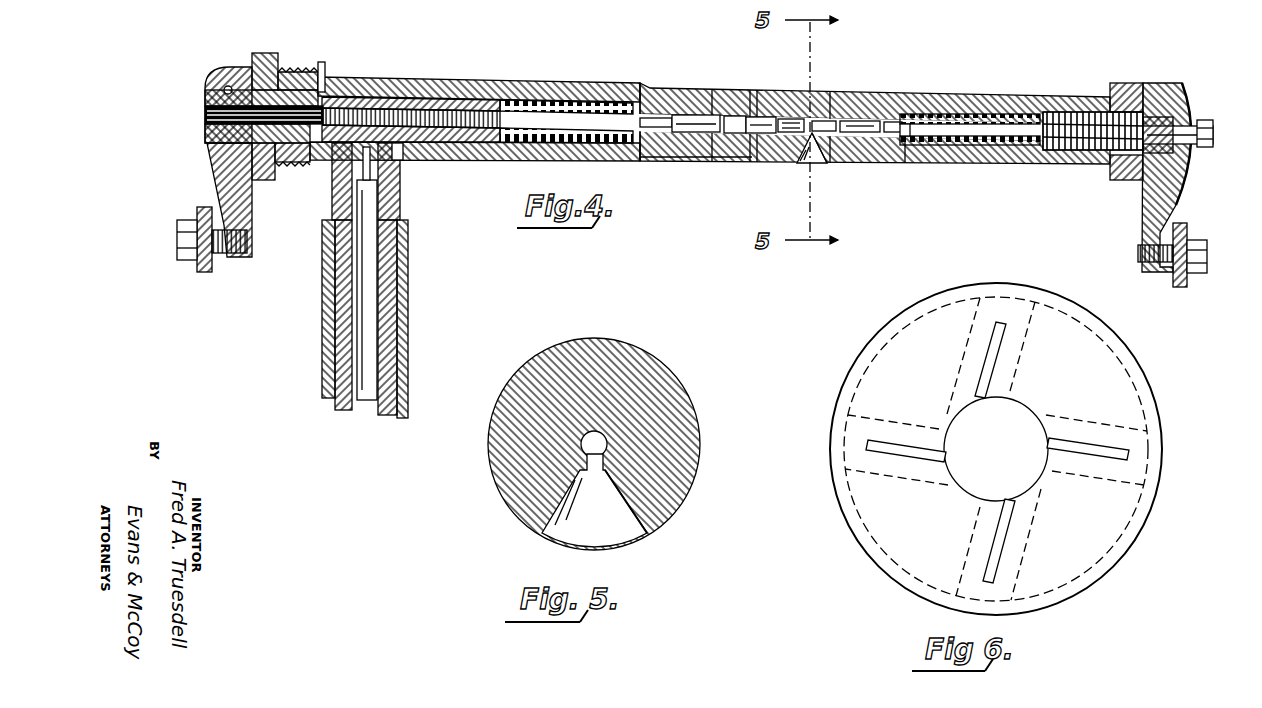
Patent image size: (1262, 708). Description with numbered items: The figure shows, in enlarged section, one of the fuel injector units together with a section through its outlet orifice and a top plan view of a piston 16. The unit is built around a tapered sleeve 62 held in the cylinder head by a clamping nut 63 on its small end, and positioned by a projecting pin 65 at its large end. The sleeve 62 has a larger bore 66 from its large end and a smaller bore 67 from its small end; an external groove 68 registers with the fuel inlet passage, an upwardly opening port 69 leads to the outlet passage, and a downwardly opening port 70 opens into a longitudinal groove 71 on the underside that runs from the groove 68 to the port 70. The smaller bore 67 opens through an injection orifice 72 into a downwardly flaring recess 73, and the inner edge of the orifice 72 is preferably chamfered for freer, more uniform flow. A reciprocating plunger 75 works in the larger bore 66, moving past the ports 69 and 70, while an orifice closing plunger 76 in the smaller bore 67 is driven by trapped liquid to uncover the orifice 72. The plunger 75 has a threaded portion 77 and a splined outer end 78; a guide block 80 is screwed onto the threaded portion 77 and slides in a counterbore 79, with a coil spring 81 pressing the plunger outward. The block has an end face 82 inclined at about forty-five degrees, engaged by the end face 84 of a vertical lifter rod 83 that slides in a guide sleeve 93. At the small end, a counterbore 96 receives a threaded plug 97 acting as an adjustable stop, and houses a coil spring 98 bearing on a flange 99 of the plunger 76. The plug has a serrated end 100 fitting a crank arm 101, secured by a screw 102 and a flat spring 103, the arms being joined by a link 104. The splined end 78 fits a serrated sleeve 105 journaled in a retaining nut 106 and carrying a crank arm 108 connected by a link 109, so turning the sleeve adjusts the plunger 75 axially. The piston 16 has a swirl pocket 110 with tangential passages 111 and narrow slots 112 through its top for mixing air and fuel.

In FIG. 6, the piston 16 is at (915, 311).
In FIG. 4, the tapered sleeve 62 is at (690, 85).
In FIG. 5, the tapered sleeve 62 is at (660, 386).
In FIG. 4, the clamping nut 63 is at (1130, 84).
In FIG. 4, the pin or key 65 is at (326, 66).
In FIG. 4, the bore 66 is at (788, 118).
In FIG. 4, the bore 67 is at (840, 119).
In FIG. 5, the bore 67 is at (607, 442).
In FIG. 4, the external groove 68 is at (660, 87).
In FIG. 4, the port 69 is at (740, 117).
In FIG. 4, the port 70 is at (746, 163).
In FIG. 4, the longitudinal groove 71 is at (690, 158).
In FIG. 4, the injection orifice 72 is at (806, 148).
In FIG. 5, the injection orifice 72 is at (592, 475).
In FIG. 4, the downwardly flaring recess 73 is at (827, 163).
In FIG. 5, the downwardly flaring recess 73 is at (630, 515).
In FIG. 4, the plunger 75 is at (712, 116).
In FIG. 4, the orifice closing plunger 76 is at (886, 119).
In FIG. 4, the threaded portion 77 is at (448, 106).
In FIG. 4, the splined outer end portion 78 is at (205, 118).
In FIG. 4, the counterbore 79 is at (585, 101).
In FIG. 4, the guide block 80 is at (496, 99).
In FIG. 4, the coil spring 81 is at (540, 143).
In FIG. 4, the outer end face 82 is at (332, 165).
In FIG. 4, the lifter rod 83 is at (408, 282).
In FIG. 4, the upper end face 84 is at (400, 150).
In FIG. 4, the guide sleeve 93 is at (408, 322).
In FIG. 4, the counterbore 96 is at (1015, 136).
In FIG. 4, the threaded plug 97 is at (1085, 112).
In FIG. 4, the coil spring 98 is at (960, 114).
In FIG. 4, the flange 99 is at (915, 163).
In FIG. 4, the serrated outer end 100 is at (1185, 125).
In FIG. 4, the crank arm 101 is at (1178, 197).
In FIG. 4, the screw 102 is at (1210, 120).
In FIG. 4, the flat spring 103 is at (1193, 165).
In FIG. 4, the link 104 is at (1195, 275).
In FIG. 4, the serrated sleeve 105 is at (205, 95).
In FIG. 4, the retaining nut 106 is at (270, 55).
In FIG. 4, the crank arm 108 is at (212, 188).
In FIG. 4, the link 109 is at (192, 268).
In FIG. 6, the swirl pocket 110 is at (975, 489).
In FIG. 6, the passages 111 is at (1070, 420).
In FIG. 6, the slots 112 is at (880, 443).